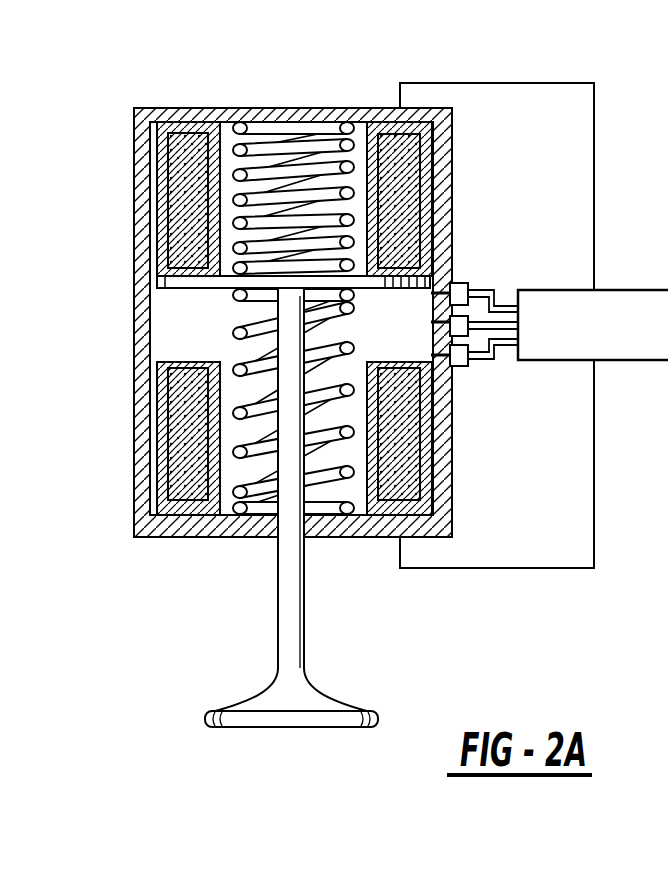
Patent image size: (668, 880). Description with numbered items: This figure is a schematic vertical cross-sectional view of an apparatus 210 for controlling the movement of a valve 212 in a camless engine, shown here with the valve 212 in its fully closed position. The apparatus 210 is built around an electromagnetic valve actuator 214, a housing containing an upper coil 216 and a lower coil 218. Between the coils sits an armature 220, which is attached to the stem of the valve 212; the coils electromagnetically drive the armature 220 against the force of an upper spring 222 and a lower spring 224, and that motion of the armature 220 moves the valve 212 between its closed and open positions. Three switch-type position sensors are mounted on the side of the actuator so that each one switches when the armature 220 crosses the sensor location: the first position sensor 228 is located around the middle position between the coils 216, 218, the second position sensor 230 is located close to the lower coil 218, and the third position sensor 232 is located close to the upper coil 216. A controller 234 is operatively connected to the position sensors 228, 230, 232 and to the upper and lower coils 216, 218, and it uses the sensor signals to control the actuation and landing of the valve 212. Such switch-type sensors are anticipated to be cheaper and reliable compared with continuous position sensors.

The apparatus 210 is at (444, 70).
The valve 212 is at (327, 693).
The electromagnetic valve actuator 214 is at (136, 335).
The upper coil 216 is at (176, 192).
The lower coil 218 is at (176, 446).
The armature 220 is at (164, 284).
The upper spring 222 is at (275, 128).
The lower spring 224 is at (318, 478).
The first position sensor 228 is at (476, 310).
The second position sensor 230 is at (456, 368).
The third position sensor 232 is at (462, 282).
The controller 234 is at (610, 362).